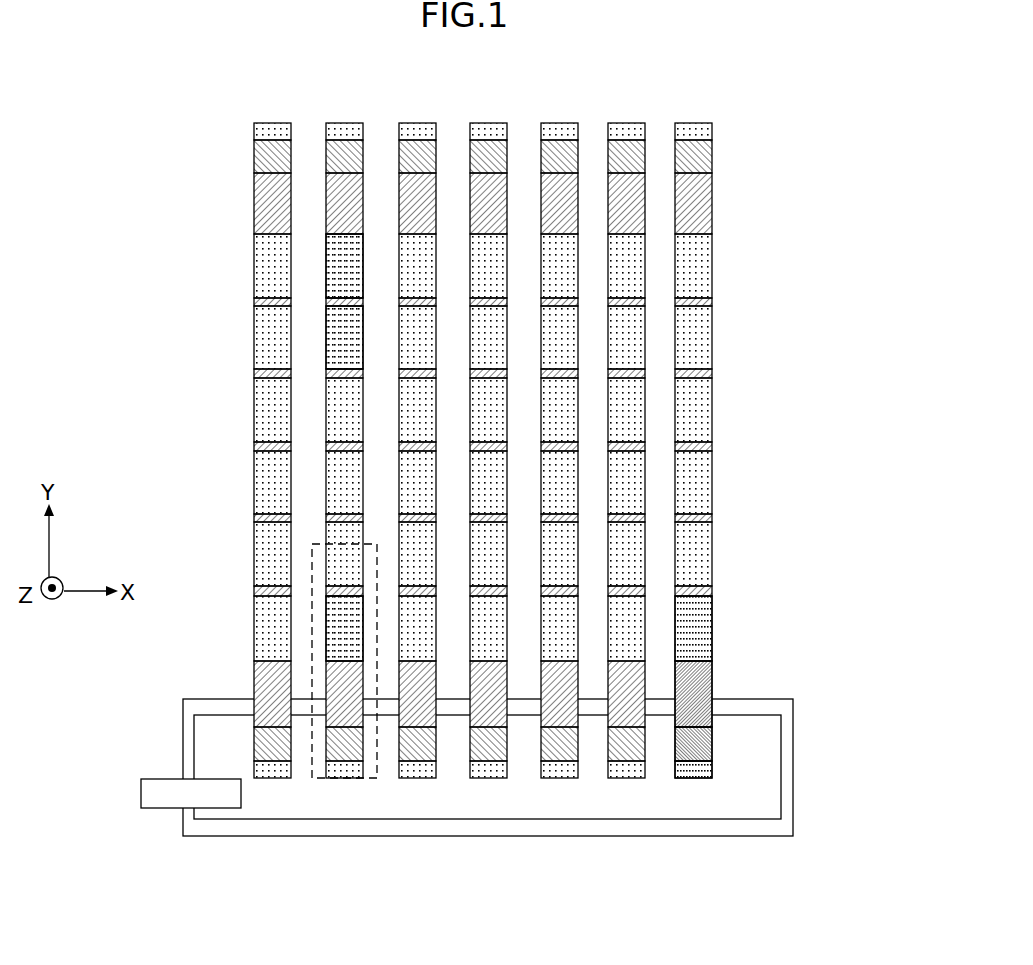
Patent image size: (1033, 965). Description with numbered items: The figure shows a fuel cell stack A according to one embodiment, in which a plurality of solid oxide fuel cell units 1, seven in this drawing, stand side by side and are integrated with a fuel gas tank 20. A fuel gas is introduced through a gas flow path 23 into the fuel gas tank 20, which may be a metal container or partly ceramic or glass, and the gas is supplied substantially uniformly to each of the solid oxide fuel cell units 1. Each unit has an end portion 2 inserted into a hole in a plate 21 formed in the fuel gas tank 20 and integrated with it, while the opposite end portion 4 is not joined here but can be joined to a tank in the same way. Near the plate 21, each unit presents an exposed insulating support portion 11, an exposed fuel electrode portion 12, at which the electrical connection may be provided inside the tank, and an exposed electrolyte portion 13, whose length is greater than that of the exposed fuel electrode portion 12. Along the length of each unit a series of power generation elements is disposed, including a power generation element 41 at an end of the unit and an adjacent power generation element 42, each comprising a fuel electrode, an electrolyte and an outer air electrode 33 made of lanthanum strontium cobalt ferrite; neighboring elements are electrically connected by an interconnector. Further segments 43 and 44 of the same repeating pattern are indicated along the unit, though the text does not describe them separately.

The solid oxide fuel cell unit 1 is at (501, 407).
The end portion 2 is at (345, 804).
The end portion 4 is at (256, 401).
The exposed insulating support portion 11 is at (690, 772).
The exposed fuel electrode portion 12 is at (690, 738).
The exposed electrolyte portion 13 is at (690, 706).
The fuel gas tank 20 is at (300, 838).
The plate 21 is at (778, 710).
The gas flow path 23 is at (162, 795).
The air electrode 33 is at (700, 624).
The power generation element 41 is at (314, 623).
The power generation element 42 is at (316, 554).
The third region 43 is at (310, 289).
The fourth region 44 is at (318, 344).
The fuel cell stack A is at (254, 80).